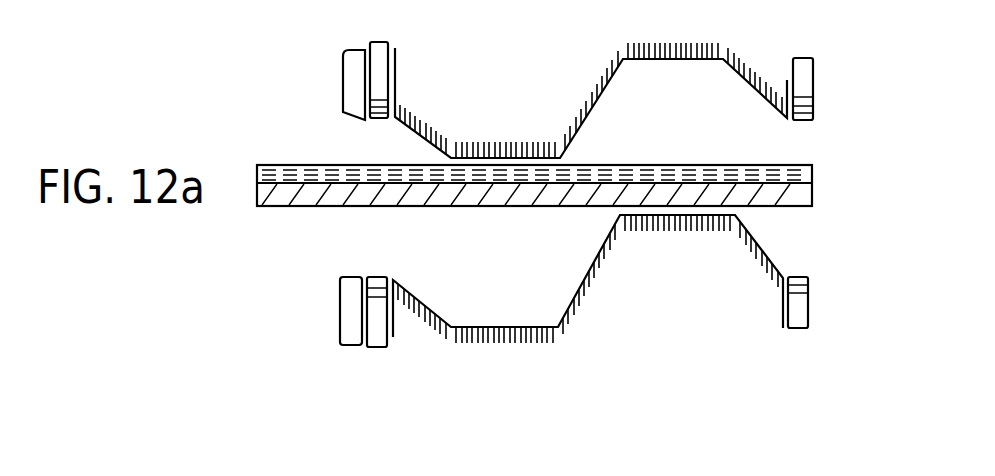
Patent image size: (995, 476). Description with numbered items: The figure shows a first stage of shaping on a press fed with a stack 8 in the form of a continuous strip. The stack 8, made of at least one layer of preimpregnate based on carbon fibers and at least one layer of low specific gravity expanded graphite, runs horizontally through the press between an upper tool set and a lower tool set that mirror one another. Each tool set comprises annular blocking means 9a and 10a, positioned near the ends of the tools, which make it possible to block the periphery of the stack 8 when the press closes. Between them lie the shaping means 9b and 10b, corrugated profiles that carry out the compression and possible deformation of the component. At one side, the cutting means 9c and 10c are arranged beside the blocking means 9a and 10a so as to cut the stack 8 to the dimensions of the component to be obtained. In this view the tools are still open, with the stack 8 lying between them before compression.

The stack 8 is at (830, 185).
The blocking means 9a is at (382, 46).
The shaping means 9b is at (527, 83).
The cutting means 9c is at (346, 66).
The blocking means 10a is at (373, 347).
The shaping means 10b is at (608, 237).
The cutting means 10c is at (340, 322).